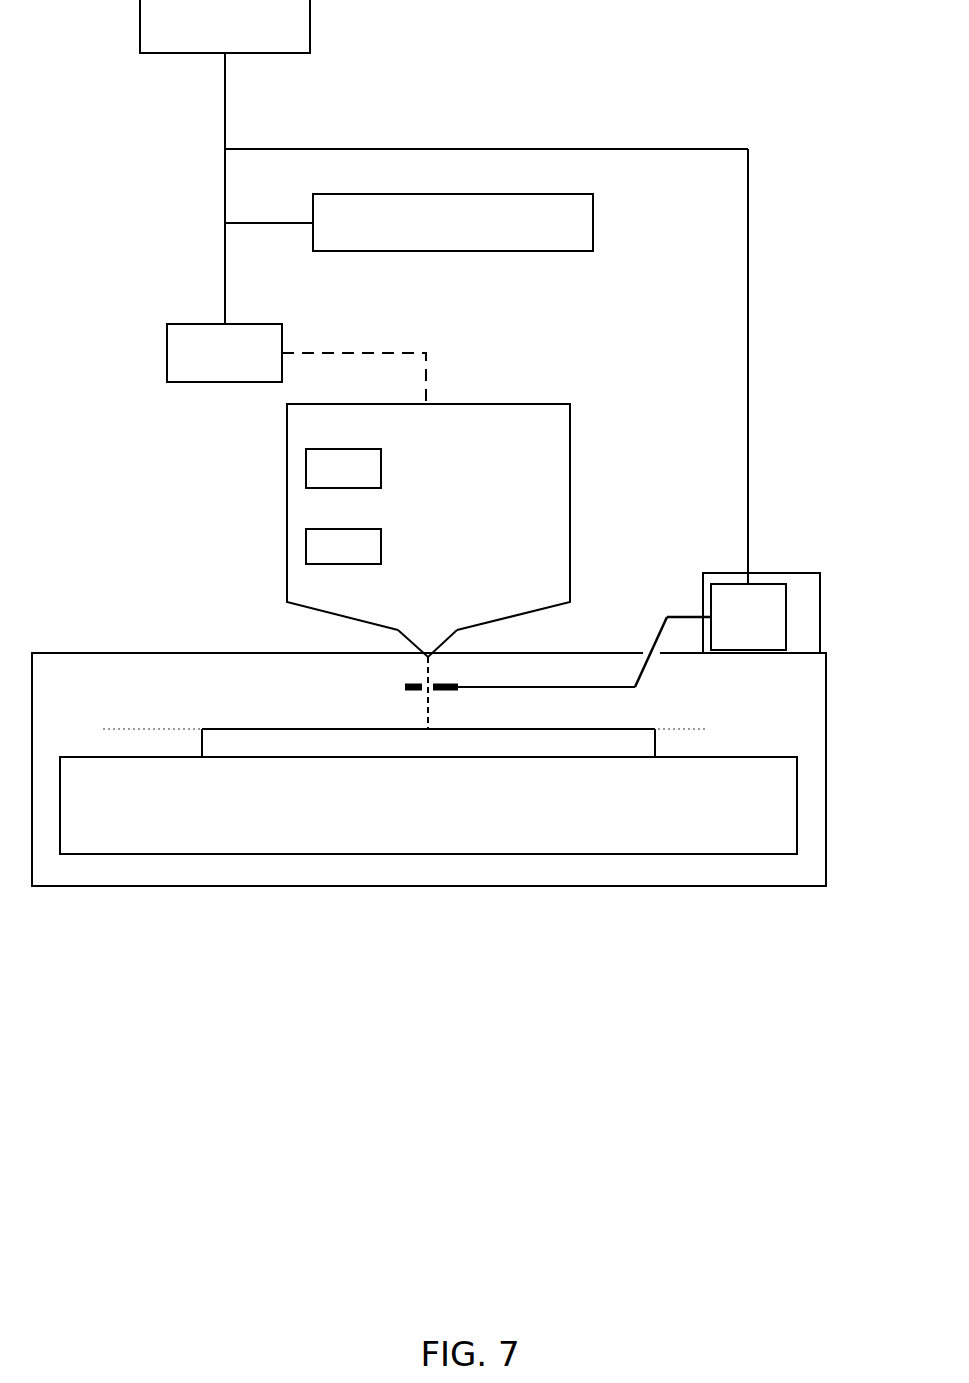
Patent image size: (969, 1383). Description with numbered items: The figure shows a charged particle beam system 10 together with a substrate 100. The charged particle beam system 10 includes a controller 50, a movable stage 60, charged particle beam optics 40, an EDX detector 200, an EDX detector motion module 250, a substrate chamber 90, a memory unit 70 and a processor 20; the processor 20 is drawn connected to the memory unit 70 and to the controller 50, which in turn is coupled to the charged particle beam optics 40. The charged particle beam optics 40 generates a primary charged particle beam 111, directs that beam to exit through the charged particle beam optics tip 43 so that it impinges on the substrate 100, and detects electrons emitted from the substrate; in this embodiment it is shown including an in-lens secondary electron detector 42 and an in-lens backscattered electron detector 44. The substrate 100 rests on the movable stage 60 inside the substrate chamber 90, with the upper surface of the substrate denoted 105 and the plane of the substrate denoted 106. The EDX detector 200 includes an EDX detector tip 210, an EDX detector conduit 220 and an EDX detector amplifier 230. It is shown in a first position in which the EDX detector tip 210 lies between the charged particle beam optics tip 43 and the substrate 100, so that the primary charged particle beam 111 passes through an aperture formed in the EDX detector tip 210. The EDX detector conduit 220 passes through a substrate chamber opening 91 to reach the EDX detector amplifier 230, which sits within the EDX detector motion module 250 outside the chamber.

The charged particle beam system 10 is at (455, 545).
The processor 20 is at (225, 162).
The charged particle beam optics 40 is at (428, 517).
The in-lens secondary electron detector 42 is at (343, 468).
The charged particle beam optics tip 43 is at (442, 649).
The in-lens backscattered electron detector 44 is at (343, 546).
The controller 50 is at (296, 364).
The movable stage 60 is at (428, 805).
The memory unit 70 is at (409, 222).
The substrate chamber 90 is at (157, 652).
The substrate chamber opening 91 is at (643, 655).
The substrate 100 is at (428, 743).
The upper surface of the substrate 105 is at (243, 728).
The plane of substrate 106 is at (383, 723).
The primary charged particle beam 111 is at (432, 722).
The EDX detector 200 is at (668, 690).
The EDX detector tip 210 is at (445, 683).
The EDX detector conduit 220 is at (690, 617).
The EDX detector amplifier 230 is at (748, 617).
The EDX detector motion module 250 is at (800, 573).